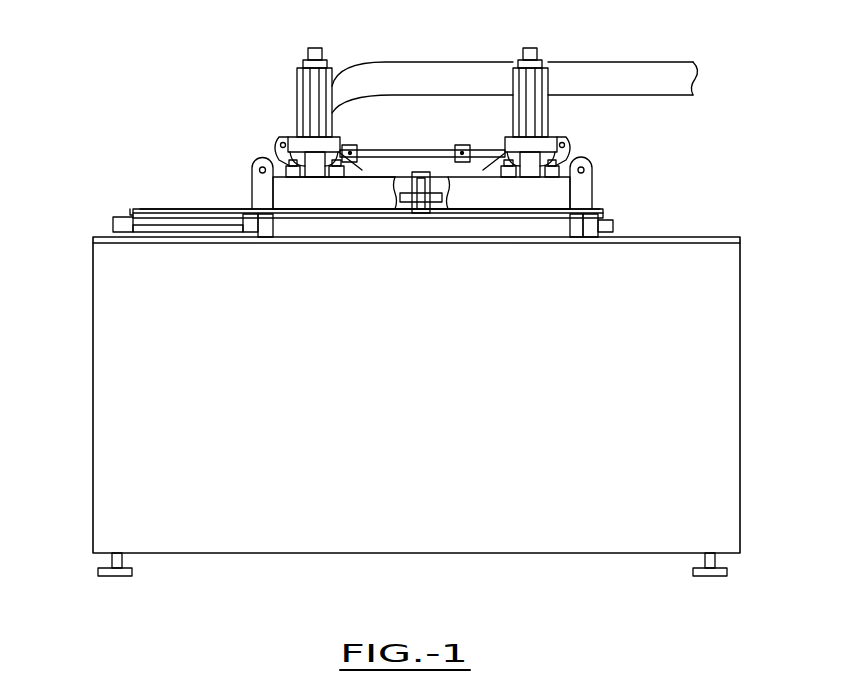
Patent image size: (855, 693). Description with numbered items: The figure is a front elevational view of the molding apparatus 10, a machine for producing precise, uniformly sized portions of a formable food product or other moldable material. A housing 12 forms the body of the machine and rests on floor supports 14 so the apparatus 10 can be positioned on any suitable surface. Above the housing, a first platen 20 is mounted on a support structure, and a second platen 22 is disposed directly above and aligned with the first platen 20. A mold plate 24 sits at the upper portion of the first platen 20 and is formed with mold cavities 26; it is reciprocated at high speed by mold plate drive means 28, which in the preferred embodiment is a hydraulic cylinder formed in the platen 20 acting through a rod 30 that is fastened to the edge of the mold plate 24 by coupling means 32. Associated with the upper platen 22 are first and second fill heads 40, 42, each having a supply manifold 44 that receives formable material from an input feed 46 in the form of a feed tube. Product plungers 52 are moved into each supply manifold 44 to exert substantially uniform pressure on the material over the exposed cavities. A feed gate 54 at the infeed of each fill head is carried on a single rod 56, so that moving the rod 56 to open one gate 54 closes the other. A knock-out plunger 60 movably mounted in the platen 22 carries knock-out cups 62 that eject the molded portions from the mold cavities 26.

The molding apparatus 10 is at (163, 140).
The housing 12 is at (93, 341).
The floor supports 14 is at (98, 571).
The first platen 20 is at (540, 232).
The second platen 22 is at (567, 196).
The mold plate 24 is at (180, 204).
The mold cavities 26 is at (393, 216).
The mold plate drive means 28 is at (177, 240).
The rod 30 is at (228, 233).
The coupling means 32 is at (130, 209).
The first fill head 40 is at (268, 132).
The second fill head 42 is at (572, 130).
The supply manifold 44 is at (297, 135).
The input feed 46 is at (433, 62).
The product plungers 52 is at (300, 79).
The feed gate 54 is at (472, 146).
The rod 56 is at (378, 178).
The knock-out plunger 60 is at (421, 215).
The knock-out cups 62 is at (445, 197).